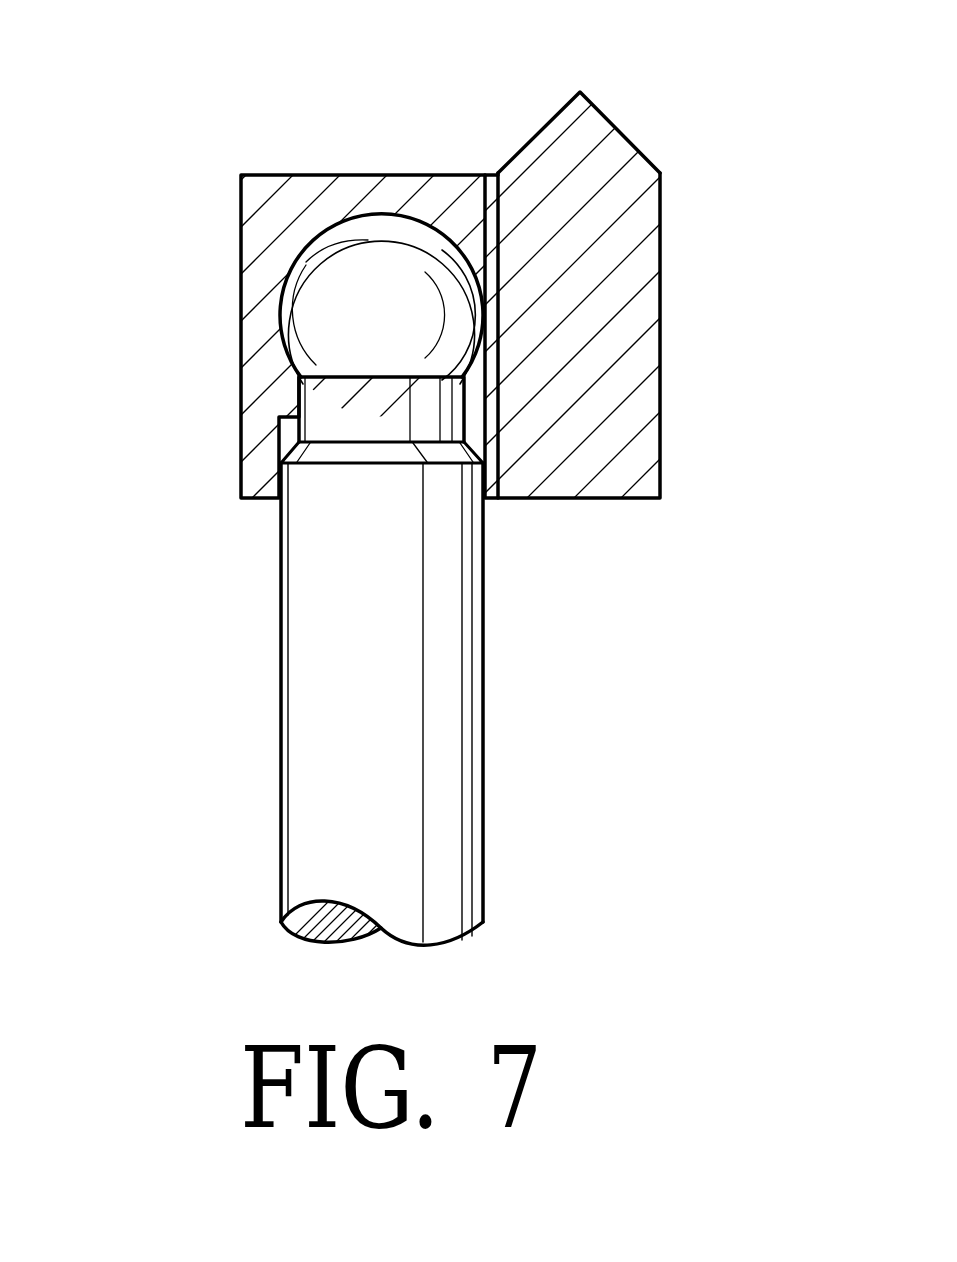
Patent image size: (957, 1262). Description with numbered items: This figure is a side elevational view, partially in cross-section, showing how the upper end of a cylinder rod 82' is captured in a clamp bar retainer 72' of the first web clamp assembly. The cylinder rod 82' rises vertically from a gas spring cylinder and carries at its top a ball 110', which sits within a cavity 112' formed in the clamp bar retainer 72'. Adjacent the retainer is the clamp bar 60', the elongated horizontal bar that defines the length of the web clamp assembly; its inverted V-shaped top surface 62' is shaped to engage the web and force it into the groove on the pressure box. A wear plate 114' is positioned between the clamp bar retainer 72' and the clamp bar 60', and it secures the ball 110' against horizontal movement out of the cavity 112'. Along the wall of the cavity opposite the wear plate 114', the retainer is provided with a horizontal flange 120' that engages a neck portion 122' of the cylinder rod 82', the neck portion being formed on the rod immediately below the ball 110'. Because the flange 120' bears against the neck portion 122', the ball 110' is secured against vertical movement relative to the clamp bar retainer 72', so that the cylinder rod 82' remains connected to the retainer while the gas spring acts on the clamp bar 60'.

The clamp bar retainer 72' is at (373, 325).
The ball 110' is at (381, 206).
The inverted V-shaped top surface 62' is at (579, 86).
The wear plate 114' is at (463, 325).
The clamp bar 60' is at (620, 325).
The cavity 112' is at (654, 423).
The horizontal flange 120' is at (268, 385).
The neck portion 122' is at (291, 499).
The cylinder rod 82' is at (305, 711).